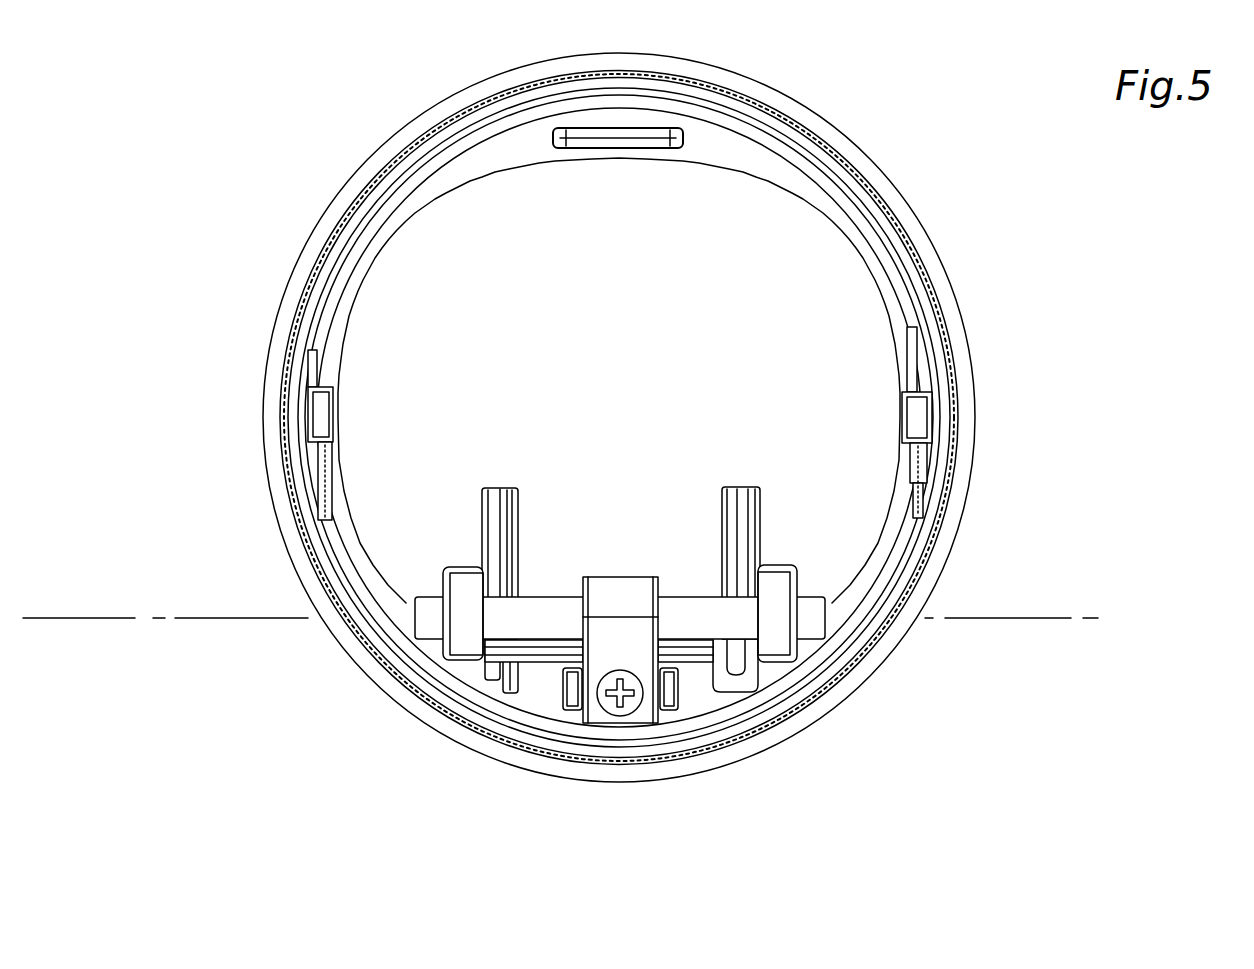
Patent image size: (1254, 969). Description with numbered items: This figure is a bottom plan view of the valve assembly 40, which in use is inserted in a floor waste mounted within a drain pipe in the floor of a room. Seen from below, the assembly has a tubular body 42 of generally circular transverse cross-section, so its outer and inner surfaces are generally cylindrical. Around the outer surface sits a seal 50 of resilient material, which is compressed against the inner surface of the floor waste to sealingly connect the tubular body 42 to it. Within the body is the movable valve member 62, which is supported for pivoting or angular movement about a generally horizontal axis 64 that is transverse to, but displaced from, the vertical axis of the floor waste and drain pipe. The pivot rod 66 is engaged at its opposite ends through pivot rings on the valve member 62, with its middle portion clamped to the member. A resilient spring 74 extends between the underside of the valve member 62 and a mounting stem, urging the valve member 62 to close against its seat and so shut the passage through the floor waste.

The valve assembly 40 is at (1064, 259).
The tubular body 42 is at (913, 328).
The seal 50 is at (963, 498).
The movable valve member 62 is at (650, 316).
The horizontal axis 64 is at (1018, 618).
The pivot rod 66 is at (552, 600).
The resilient spring 74 is at (493, 537).